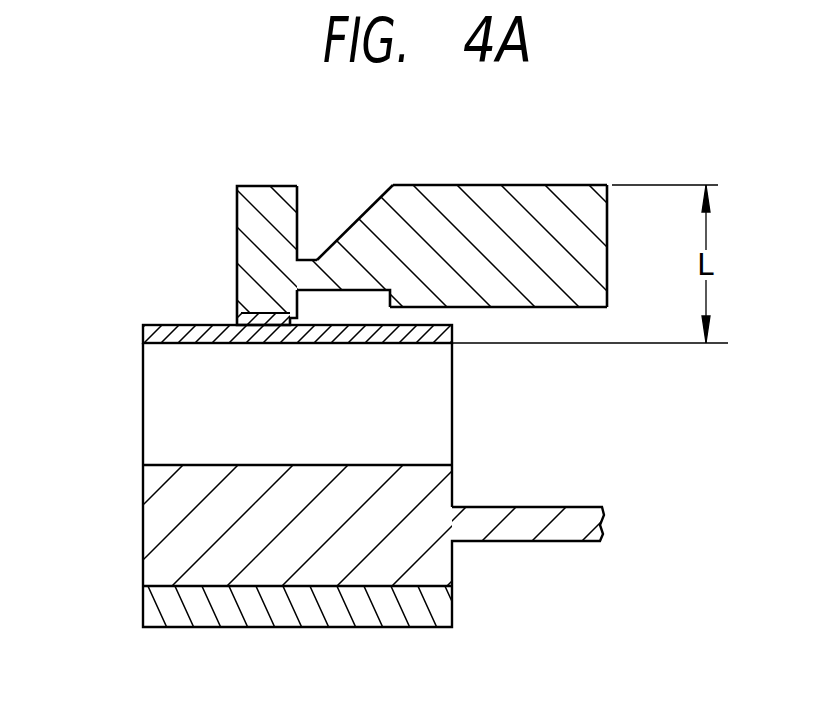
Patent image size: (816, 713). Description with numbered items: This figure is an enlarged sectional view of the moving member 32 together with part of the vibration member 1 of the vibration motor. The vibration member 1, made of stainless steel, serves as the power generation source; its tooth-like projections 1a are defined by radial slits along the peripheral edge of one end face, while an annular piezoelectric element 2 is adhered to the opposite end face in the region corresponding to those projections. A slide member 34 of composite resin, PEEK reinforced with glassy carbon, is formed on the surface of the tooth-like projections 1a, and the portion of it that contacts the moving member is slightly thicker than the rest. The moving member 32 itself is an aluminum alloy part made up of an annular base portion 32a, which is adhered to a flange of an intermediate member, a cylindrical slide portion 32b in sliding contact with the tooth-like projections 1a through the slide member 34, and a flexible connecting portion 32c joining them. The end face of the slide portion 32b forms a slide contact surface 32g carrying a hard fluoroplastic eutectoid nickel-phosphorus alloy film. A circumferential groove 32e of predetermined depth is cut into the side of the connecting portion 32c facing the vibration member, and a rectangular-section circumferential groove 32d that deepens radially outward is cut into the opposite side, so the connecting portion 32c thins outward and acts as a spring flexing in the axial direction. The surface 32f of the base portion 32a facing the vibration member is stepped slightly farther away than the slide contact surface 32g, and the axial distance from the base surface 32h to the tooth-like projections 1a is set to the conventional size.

The vibration member 1 is at (332, 494).
The tooth-like projections 1a is at (157, 395).
The annular piezoelectric element 2 is at (155, 600).
The moving member 32 is at (416, 252).
The annular base portion 32a is at (472, 222).
The cylindrical slide portion 32b is at (263, 198).
The flexible connecting portion 32c is at (363, 257).
The circumferential groove 32d is at (312, 240).
The circumferential groove 32e is at (350, 300).
The surface of the base portion 32f is at (543, 308).
The slide contact surface 32g is at (271, 326).
The base surface 32h is at (553, 185).
The slide member 34 is at (157, 330).